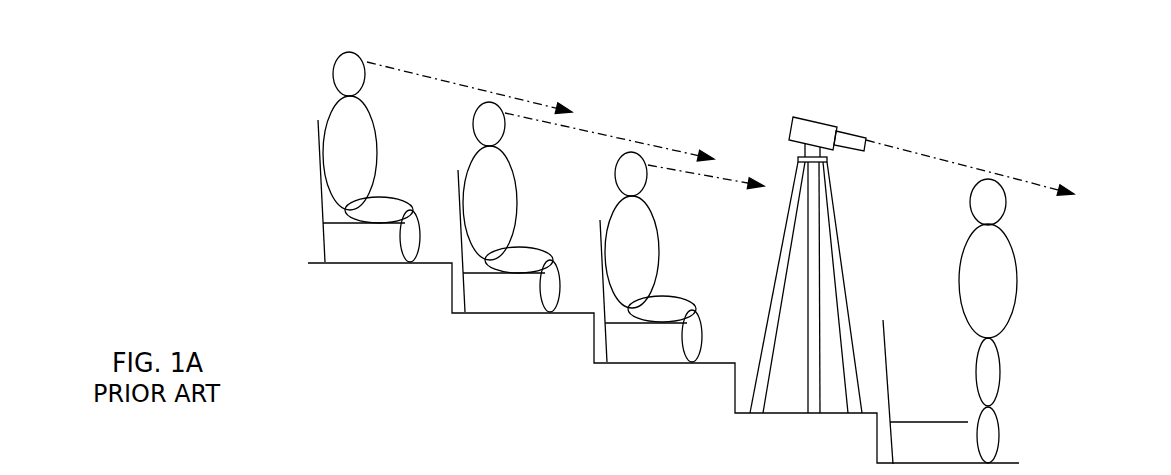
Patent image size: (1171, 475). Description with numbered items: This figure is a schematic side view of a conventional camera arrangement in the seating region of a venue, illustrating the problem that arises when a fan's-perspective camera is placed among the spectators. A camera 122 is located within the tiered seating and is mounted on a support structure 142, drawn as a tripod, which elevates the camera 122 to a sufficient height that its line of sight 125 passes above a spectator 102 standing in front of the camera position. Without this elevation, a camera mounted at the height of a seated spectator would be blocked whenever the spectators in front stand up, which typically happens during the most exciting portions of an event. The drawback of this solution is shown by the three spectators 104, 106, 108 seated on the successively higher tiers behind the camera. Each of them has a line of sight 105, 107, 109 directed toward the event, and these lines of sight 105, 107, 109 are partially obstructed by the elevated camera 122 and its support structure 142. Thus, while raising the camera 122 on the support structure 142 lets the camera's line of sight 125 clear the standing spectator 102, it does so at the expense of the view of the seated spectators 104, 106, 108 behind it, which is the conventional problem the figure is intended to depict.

The spectator 102 is at (1016, 283).
The spectator 104 is at (622, 302).
The line of sight 105 is at (737, 180).
The spectator 106 is at (488, 252).
The line of sight 107 is at (622, 138).
The spectator 108 is at (329, 116).
The line of sight 109 is at (417, 73).
The camera 122 is at (824, 123).
The line of sight 125 is at (968, 168).
The support structure 142 is at (838, 247).